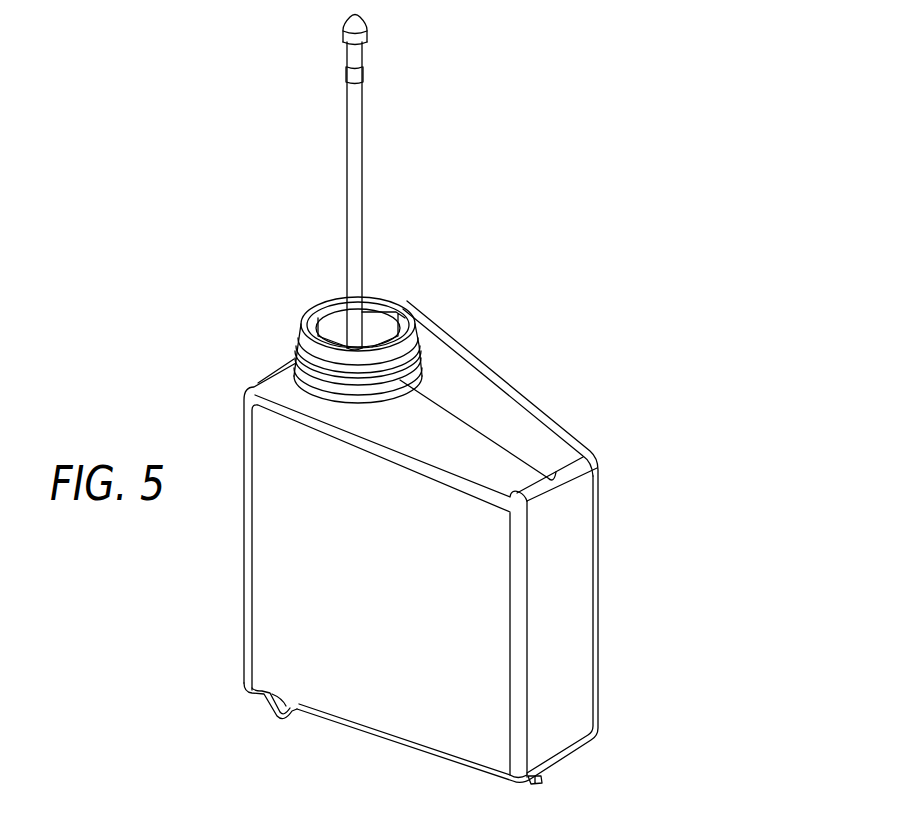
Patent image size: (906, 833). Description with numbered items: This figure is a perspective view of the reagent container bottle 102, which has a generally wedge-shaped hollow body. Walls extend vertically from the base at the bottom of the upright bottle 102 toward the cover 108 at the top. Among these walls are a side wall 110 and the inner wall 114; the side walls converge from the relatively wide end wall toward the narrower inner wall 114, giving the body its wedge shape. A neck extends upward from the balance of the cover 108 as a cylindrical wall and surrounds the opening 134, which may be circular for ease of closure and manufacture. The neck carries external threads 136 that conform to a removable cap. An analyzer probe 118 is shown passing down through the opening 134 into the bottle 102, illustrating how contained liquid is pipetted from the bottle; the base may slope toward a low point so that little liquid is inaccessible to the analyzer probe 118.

The bottle 102 is at (542, 445).
The cover 108 is at (487, 397).
The side wall 110 is at (400, 638).
The inner wall 114 is at (557, 623).
The analyzer probe 118 is at (362, 150).
The opening 134 is at (334, 316).
The external threads 136 is at (300, 345).